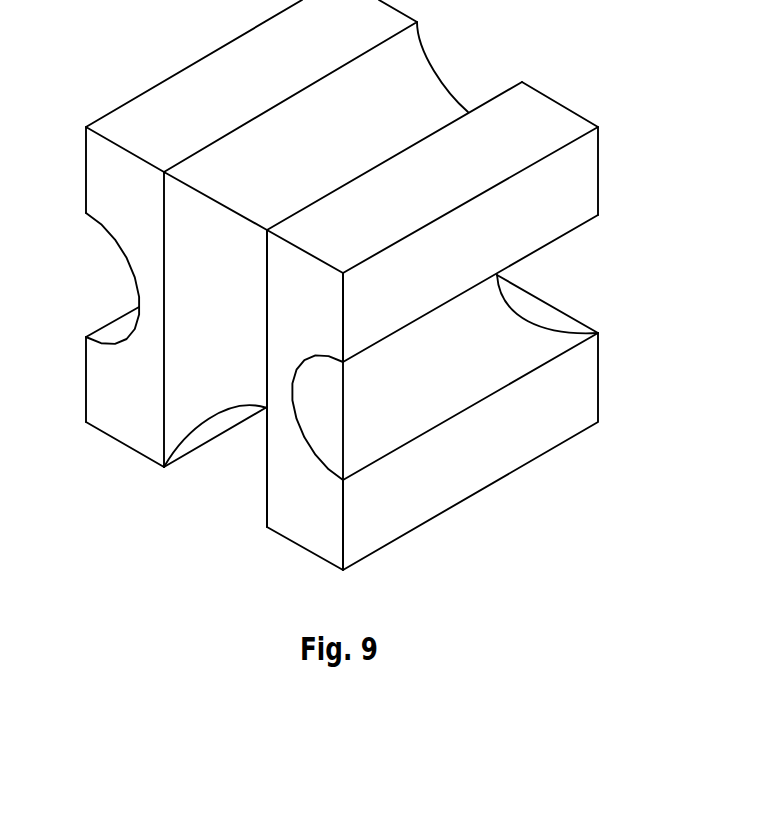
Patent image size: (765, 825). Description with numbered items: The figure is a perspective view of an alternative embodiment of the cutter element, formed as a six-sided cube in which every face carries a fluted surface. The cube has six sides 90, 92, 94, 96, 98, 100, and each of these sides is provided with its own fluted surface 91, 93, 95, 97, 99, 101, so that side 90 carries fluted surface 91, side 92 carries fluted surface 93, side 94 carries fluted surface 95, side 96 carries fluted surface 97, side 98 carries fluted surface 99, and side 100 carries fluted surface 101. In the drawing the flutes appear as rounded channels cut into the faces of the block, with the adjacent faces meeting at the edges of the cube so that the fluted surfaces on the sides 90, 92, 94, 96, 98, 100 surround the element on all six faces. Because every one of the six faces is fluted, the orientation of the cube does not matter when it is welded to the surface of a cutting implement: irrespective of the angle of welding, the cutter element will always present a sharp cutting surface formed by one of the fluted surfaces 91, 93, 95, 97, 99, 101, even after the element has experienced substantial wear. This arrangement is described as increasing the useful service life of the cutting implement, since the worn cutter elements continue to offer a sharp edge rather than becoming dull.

The side 90 is at (320, 514).
The fluted surface 91 is at (233, 337).
The side 92 is at (475, 469).
The fluted surface 93 is at (463, 371).
The side 94 is at (441, 189).
The fluted surface 95 is at (346, 147).
The side 96 is at (85, 175).
The fluted surface 97 is at (112, 242).
The side 98 is at (127, 447).
The fluted surface 99 is at (235, 405).
The side 100 is at (600, 170).
The fluted surface 101 is at (527, 313).